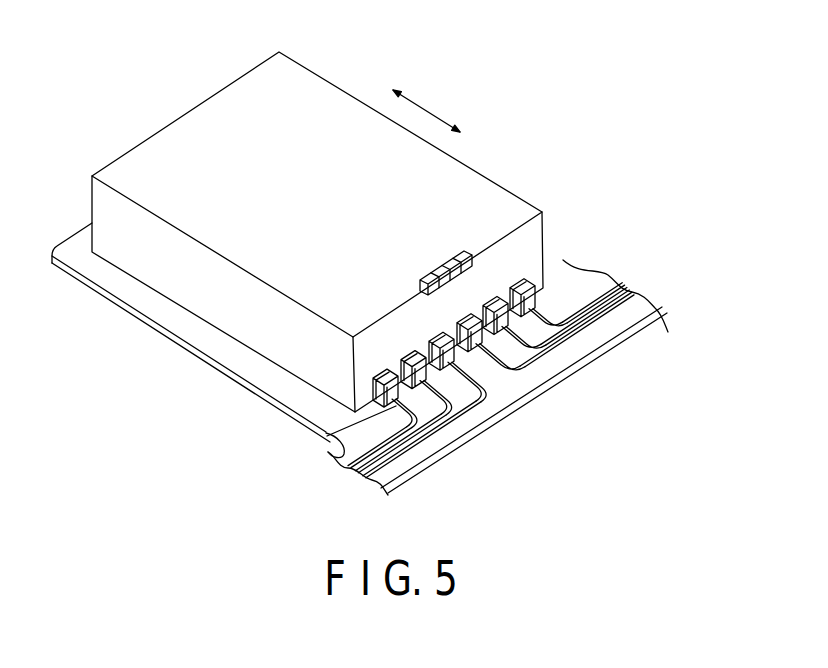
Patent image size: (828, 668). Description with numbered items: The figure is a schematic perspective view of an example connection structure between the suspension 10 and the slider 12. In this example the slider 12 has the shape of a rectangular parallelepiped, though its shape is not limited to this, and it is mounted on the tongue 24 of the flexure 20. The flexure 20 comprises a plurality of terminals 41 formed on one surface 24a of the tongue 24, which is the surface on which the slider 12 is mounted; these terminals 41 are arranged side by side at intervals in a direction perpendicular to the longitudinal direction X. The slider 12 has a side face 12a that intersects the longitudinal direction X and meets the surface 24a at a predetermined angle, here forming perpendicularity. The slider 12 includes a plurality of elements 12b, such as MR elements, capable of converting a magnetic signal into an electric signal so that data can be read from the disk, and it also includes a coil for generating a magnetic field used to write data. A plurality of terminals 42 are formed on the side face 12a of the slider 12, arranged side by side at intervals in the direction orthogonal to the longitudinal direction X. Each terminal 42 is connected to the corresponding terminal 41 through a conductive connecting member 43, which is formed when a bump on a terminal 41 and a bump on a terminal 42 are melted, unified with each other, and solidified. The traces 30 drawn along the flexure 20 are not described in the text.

The suspension 10 is at (614, 227).
The slider 12 is at (240, 92).
The side face 12a is at (529, 250).
The elements 12b is at (447, 263).
The flexure 20 is at (580, 369).
The tongue 24 is at (176, 348).
The surface 24a is at (280, 383).
The wiring traces 30 is at (610, 305).
The terminals 41 is at (325, 436).
The terminals 42 is at (385, 378).
The conductive connecting members 43 is at (432, 414).